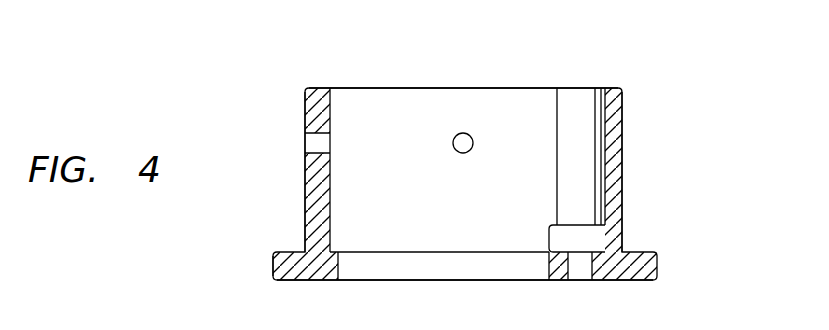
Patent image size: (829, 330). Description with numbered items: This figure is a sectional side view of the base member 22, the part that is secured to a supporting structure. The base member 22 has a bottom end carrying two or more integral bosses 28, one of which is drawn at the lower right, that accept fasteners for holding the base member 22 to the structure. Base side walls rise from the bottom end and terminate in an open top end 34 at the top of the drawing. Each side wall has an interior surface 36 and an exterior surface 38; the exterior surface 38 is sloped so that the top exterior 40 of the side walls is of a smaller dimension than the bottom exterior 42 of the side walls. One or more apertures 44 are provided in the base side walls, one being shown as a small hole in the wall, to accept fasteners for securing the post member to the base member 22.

The base member 22 is at (665, 80).
The integral boss 28 is at (562, 240).
The open top end 34 is at (410, 88).
The interior surface 36 is at (605, 156).
The exterior surface 38 is at (623, 160).
The top exterior 40 is at (305, 100).
The bottom exterior 42 is at (305, 252).
The aperture 44 is at (468, 135).